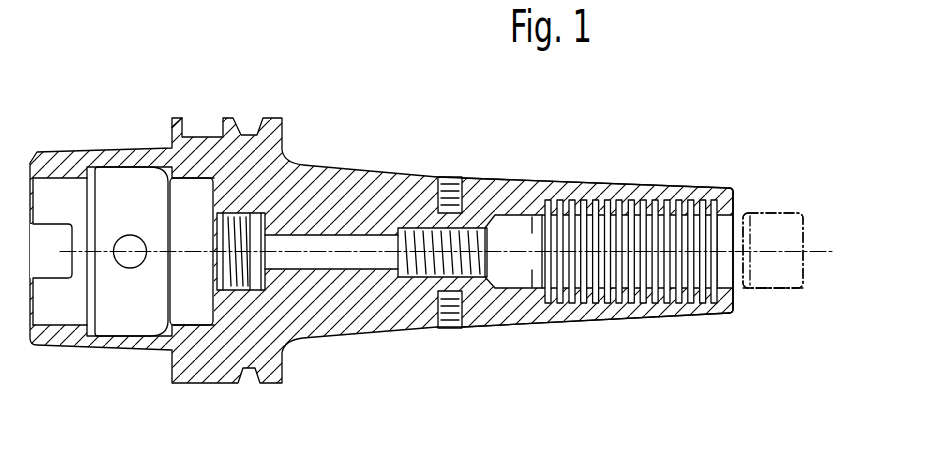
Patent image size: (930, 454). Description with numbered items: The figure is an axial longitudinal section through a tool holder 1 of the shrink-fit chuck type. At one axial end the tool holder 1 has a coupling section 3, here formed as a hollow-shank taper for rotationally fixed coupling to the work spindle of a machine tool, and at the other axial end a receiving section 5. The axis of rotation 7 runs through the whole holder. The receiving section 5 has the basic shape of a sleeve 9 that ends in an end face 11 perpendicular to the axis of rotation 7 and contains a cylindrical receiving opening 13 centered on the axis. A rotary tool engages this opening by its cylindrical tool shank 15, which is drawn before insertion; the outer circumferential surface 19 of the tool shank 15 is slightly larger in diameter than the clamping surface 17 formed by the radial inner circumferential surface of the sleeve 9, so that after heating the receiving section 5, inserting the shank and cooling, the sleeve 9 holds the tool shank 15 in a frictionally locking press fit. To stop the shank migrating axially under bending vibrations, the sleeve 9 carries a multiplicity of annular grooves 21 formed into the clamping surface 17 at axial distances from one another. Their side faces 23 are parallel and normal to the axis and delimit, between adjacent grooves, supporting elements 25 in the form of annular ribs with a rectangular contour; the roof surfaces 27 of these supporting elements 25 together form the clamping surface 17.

The tool holder 1 is at (366, 141).
The coupling section 3 is at (100, 141).
The receiving section 5 is at (615, 166).
The axis of rotation 7 is at (817, 242).
The sleeve 9 is at (572, 188).
The end face 11 is at (735, 197).
The receiving opening 13 is at (718, 272).
The tool shank 15 is at (783, 210).
The clamping surface 17 is at (590, 282).
The outer circumferential surface 19 is at (773, 290).
The annular grooves 21 is at (677, 303).
The side faces 23 is at (656, 202).
The supporting elements 25 is at (580, 292).
The roof surfaces 27 is at (577, 292).